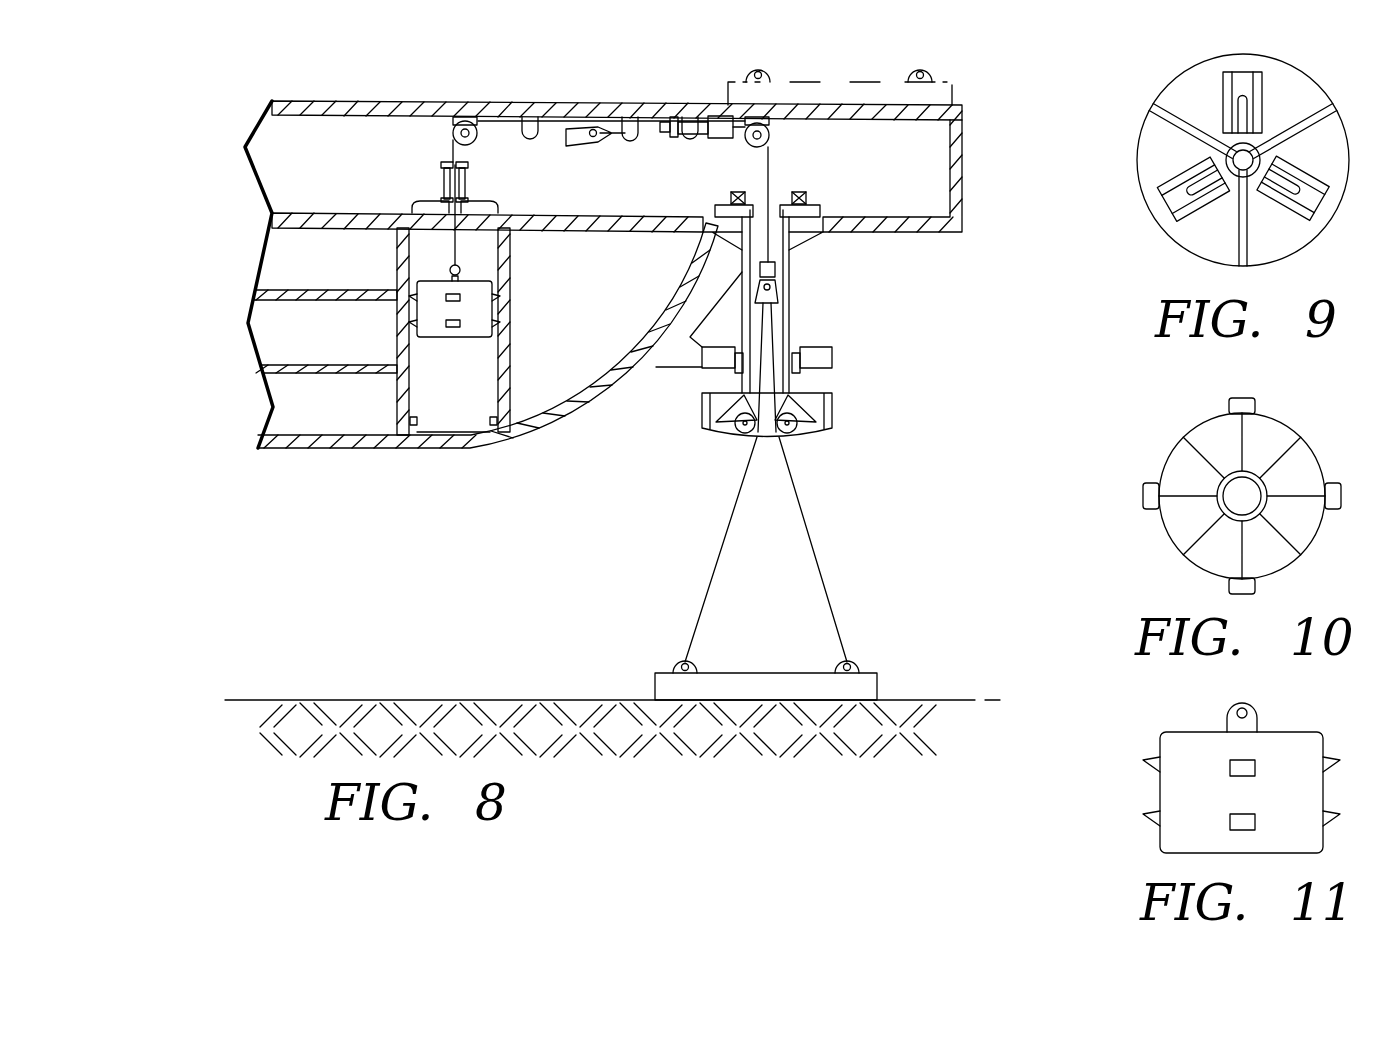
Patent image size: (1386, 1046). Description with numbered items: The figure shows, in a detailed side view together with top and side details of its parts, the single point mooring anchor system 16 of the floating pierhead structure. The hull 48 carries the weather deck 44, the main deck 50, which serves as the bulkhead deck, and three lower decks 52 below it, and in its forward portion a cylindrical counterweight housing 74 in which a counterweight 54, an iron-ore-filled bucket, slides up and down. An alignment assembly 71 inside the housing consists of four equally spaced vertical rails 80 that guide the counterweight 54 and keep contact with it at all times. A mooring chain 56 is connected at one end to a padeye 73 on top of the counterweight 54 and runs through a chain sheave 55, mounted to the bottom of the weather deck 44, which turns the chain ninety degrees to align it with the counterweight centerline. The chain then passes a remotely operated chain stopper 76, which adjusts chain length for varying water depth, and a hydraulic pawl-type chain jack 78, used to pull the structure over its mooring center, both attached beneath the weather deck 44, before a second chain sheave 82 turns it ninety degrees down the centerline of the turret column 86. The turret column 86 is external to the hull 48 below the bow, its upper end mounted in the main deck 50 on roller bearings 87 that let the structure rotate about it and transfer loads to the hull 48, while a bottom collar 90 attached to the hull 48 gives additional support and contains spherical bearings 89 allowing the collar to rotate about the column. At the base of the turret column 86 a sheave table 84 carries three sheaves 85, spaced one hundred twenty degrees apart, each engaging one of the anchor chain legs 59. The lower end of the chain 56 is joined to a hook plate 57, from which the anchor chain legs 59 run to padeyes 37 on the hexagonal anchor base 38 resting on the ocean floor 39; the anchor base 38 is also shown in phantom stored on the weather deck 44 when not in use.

In FIG. 8, the single point mooring anchor system 16 is at (847, 382).
In FIG. 8, the padeye 37 is at (680, 662).
In FIG. 8, the anchor base 38 is at (955, 72).
In FIG. 8, the ocean floor 39 is at (580, 695).
In FIG. 8, the weather deck 44 is at (340, 101).
In FIG. 8, the hull 48 is at (336, 449).
In FIG. 8, the main deck 50 is at (344, 191).
In FIG. 8, the lower decks 52 is at (342, 278).
In FIG. 8, the counterweight 54 is at (495, 338).
In FIG. 10, the counterweight 54 is at (1227, 485).
In FIG. 11, the counterweight 54 is at (1201, 768).
In FIG. 8, the chain sheave 55 is at (470, 121).
In FIG. 8, the mooring chain 56 is at (530, 126).
In FIG. 8, the hook plate 57 is at (778, 291).
In FIG. 8, the anchor chain legs 59 is at (718, 525).
In FIG. 8, the alignment assembly 71 is at (500, 313).
In FIG. 8, the padeye 73 is at (461, 270).
In FIG. 8, the counterweight housing 74 is at (418, 422).
In FIG. 8, the chain stopper 76 is at (620, 130).
In FIG. 8, the chain jack 78 is at (683, 120).
In FIG. 10, the vertical rails 80 is at (1143, 497).
In FIG. 11, the vertical rails 80 is at (1148, 818).
In FIG. 8, the chain sheave 82 is at (770, 138).
In FIG. 8, the sheave table 84 is at (789, 435).
In FIG. 9, the sheave table 84 is at (1225, 160).
In FIG. 8, the sheave 85 is at (790, 434).
In FIG. 9, the sheave 85 is at (1205, 178).
In FIG. 8, the turret column 86 is at (790, 310).
In FIG. 8, the roller bearings 87 is at (731, 194).
In FIG. 8, the spherical bearings 89 is at (800, 373).
In FIG. 8, the bottom collar 90 is at (835, 356).